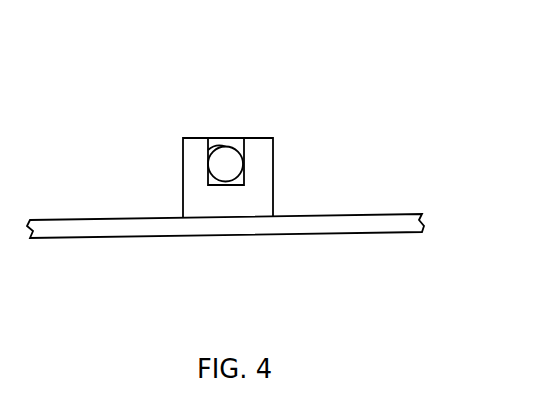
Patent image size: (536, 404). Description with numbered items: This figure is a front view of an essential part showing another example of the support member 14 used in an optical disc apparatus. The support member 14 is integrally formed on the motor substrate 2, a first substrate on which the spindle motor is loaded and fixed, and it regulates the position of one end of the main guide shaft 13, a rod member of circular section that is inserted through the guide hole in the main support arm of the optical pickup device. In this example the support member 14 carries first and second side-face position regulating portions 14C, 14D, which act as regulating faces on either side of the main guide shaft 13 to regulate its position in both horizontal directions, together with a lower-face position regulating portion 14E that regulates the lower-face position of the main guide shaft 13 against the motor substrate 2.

The motor substrate 2 is at (378, 223).
The main guide shaft 13 is at (222, 163).
The support member 14 is at (260, 180).
The first side-face position regulating portion 14C is at (242, 146).
The second side-face position regulating portion 14D is at (210, 150).
The lower-face position regulating portion 14E is at (215, 183).